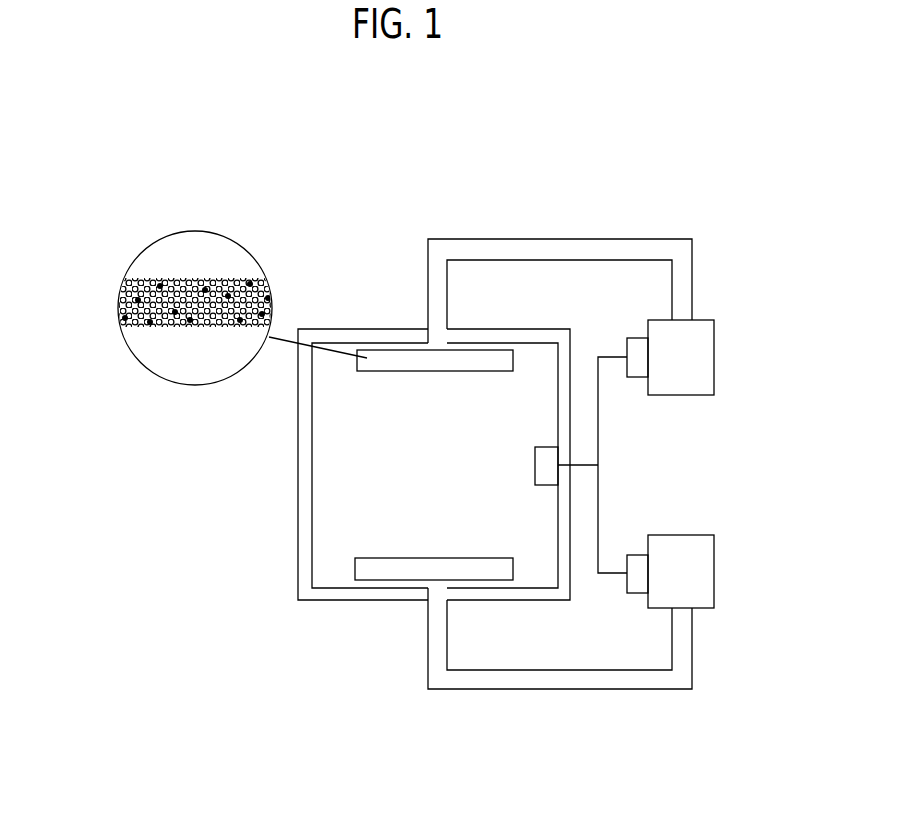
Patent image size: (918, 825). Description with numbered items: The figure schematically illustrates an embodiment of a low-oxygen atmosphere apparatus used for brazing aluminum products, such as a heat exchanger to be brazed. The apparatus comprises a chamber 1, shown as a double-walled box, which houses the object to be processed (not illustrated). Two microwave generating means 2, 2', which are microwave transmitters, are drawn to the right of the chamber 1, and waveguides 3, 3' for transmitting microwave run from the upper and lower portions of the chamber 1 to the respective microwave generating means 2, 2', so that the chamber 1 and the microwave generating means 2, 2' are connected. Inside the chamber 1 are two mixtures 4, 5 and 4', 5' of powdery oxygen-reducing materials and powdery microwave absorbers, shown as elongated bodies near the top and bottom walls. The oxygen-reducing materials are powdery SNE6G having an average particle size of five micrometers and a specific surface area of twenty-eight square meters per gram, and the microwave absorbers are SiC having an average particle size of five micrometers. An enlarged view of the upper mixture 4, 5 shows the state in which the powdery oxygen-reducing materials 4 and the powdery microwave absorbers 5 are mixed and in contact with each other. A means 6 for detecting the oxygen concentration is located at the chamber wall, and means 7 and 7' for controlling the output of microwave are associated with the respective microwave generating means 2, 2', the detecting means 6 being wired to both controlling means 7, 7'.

The chamber 1 is at (298, 532).
The microwave generating means 2 is at (715, 357).
The microwave generating means 2' is at (718, 571).
The waveguide 3 is at (560, 251).
The waveguide 3' is at (560, 681).
The powdery oxygen-reducing material 4 is at (271, 306).
The powdery microwave absorber 5 is at (278, 306).
The powdery oxygen-reducing material 4' is at (416, 627).
The powdery microwave absorber 5' is at (434, 569).
The means for detecting the oxygen concentration 6 is at (547, 450).
The means for controlling the output of microwave 7 is at (623, 365).
The means for controlling the output of microwave 7' is at (623, 563).